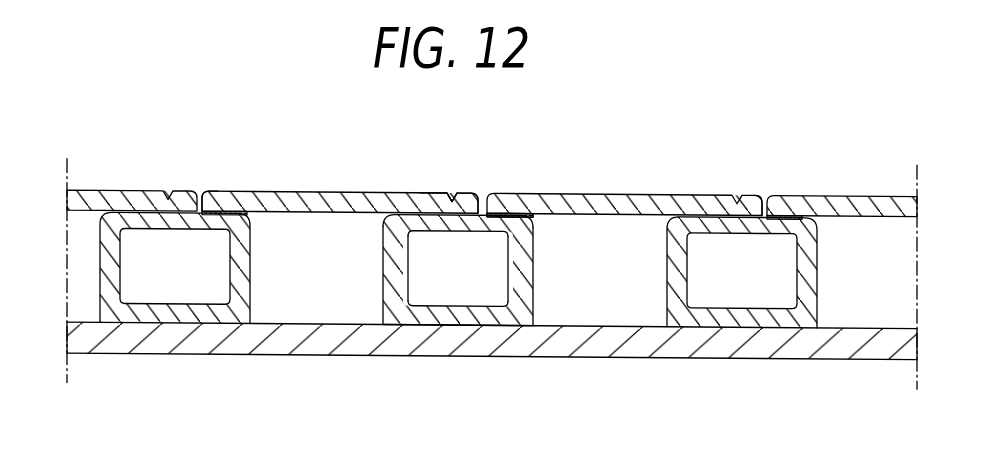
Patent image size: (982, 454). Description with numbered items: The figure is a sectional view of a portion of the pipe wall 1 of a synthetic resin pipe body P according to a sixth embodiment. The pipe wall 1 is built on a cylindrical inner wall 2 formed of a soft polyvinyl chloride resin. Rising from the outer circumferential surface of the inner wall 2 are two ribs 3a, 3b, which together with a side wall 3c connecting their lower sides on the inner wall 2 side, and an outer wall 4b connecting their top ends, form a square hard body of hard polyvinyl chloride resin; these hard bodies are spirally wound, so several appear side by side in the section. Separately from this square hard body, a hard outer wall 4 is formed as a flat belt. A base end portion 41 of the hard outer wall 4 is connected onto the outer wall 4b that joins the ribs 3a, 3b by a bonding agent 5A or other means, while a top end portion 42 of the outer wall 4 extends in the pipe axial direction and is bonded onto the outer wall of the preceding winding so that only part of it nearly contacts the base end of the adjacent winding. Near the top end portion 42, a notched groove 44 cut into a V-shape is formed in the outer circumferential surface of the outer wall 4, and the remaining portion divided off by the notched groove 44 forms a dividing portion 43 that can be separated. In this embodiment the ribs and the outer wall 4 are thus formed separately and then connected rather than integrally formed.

The pipe wall 1 is at (642, 195).
The inner wall 2 is at (707, 362).
The rising rib 3a is at (404, 278).
The rising rib 3b is at (517, 284).
The side wall 3c is at (484, 296).
The hard outer wall 4 is at (318, 192).
The outer wall 4b is at (143, 193).
The base end portion 41 is at (218, 192).
The top end portion 42 is at (468, 195).
The dividing portion 43 is at (442, 198).
The notched groove 44 is at (451, 197).
The bonding agent 5A is at (520, 197).
The pipe body P is at (768, 184).